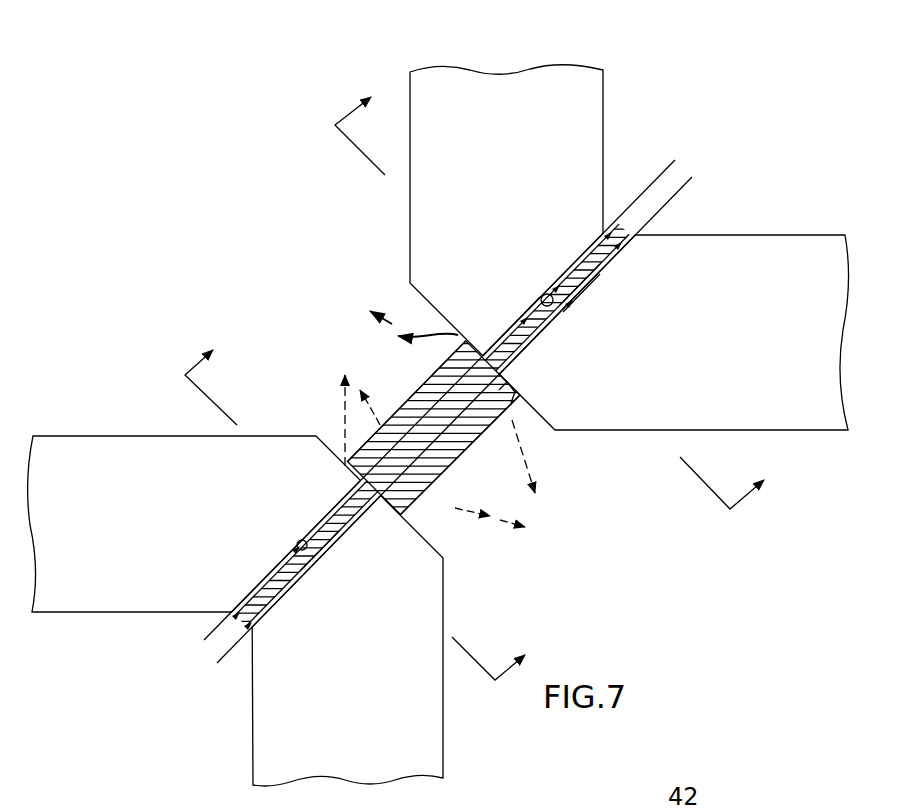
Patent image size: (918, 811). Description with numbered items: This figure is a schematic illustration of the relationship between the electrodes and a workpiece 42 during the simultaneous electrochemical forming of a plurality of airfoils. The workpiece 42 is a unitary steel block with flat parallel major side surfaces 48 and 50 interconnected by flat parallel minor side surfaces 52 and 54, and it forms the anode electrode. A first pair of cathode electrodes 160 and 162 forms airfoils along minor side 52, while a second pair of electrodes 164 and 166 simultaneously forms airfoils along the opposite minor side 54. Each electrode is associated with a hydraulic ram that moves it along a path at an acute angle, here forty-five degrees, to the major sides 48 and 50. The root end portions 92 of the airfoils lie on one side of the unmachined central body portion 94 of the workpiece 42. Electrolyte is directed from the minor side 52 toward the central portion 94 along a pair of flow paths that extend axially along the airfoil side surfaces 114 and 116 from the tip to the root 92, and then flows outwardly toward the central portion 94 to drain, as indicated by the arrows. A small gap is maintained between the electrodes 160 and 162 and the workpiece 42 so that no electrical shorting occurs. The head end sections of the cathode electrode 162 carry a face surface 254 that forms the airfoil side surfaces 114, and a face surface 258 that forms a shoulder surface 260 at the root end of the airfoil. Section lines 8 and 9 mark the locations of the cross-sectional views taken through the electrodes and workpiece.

The cathode electrode 160 is at (608, 80).
The cathode electrode 162 is at (838, 198).
The electrode 164 is at (250, 774).
The electrode 166 is at (103, 436).
The workpiece 42 is at (348, 393).
The major side surface 48 is at (390, 418).
The major side surface 50 is at (456, 458).
The minor side surface 52 is at (612, 238).
The minor side surface 54 is at (240, 621).
The root end portion 92 is at (486, 346).
The central body portion 94 is at (428, 378).
The side surface of the airfoil 114 is at (581, 287).
The side surface of the airfoil 116 is at (550, 286).
The face surface 254 is at (563, 312).
The face surface 258 is at (513, 402).
The shoulder surface 260 is at (520, 422).
The section line 8- 8 is at (363, 504).
The section line 9- 9 is at (559, 293).